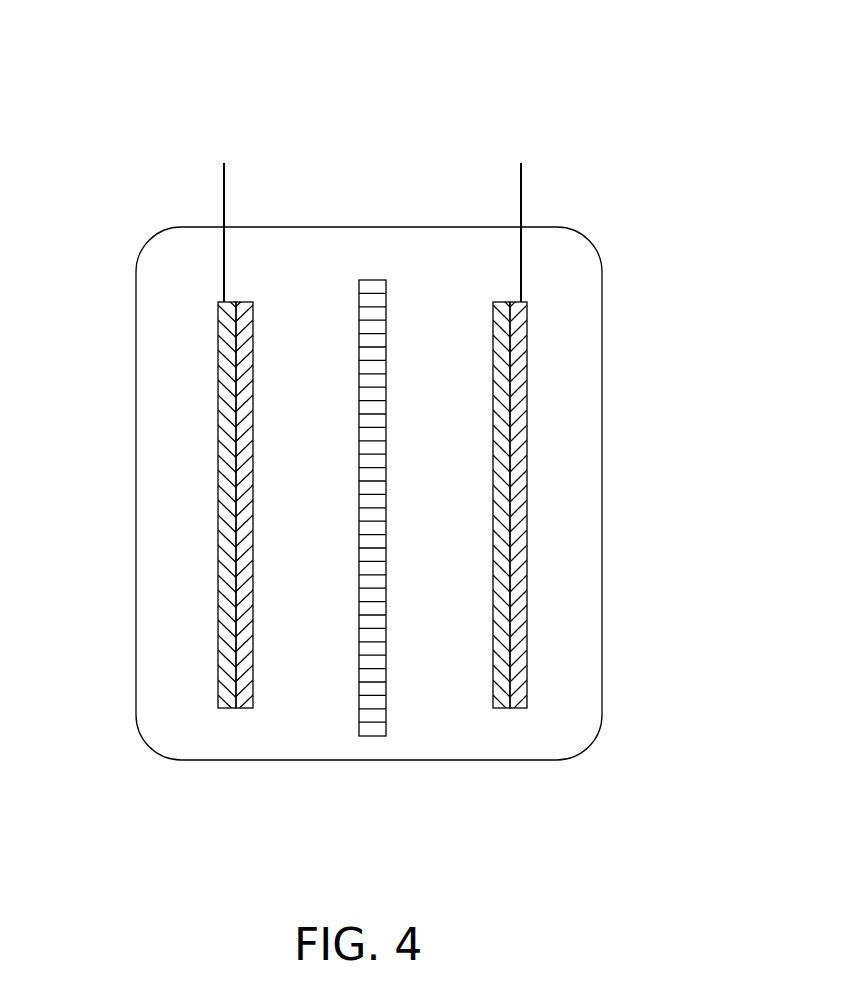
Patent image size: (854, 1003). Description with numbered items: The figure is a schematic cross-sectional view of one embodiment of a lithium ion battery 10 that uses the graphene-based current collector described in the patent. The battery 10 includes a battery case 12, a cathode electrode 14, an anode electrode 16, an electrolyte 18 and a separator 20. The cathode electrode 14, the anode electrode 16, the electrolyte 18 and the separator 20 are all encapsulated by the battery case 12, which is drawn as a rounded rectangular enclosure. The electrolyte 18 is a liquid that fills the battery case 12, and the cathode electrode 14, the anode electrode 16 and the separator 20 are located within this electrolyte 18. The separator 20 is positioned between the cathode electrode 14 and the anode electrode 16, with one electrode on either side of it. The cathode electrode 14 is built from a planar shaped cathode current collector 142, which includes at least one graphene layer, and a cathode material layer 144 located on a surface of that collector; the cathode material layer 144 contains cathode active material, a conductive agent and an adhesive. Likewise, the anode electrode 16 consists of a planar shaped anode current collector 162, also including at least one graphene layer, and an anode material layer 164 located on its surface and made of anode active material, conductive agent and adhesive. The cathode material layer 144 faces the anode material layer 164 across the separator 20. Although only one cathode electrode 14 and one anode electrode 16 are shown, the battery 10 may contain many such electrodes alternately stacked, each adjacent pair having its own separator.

The lithium ion battery 10 is at (370, 68).
The battery case 12 is at (603, 370).
The cathode electrode 14 is at (276, 435).
The cathode current collector 142 is at (225, 589).
The cathode material layer 144 is at (243, 633).
The anode electrode 16 is at (604, 505).
The anode current collector 162 is at (516, 587).
The anode material layer 164 is at (502, 632).
The electrolyte 18 is at (322, 713).
The separator 20 is at (386, 658).